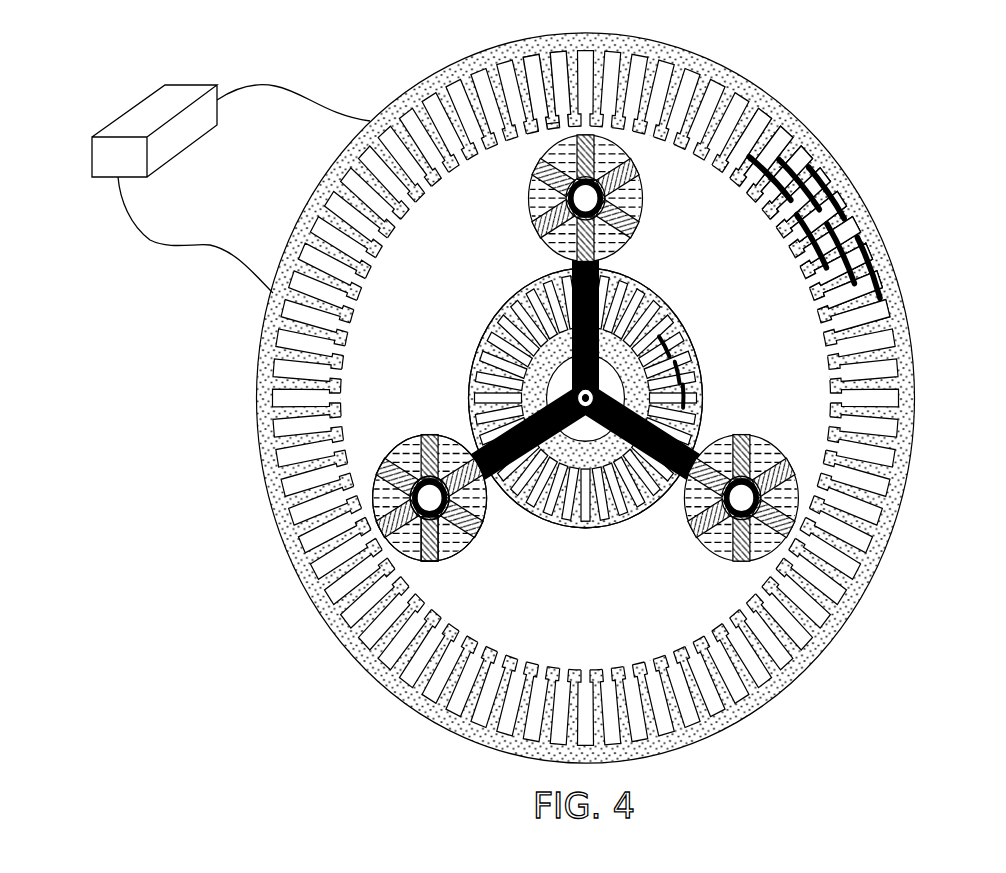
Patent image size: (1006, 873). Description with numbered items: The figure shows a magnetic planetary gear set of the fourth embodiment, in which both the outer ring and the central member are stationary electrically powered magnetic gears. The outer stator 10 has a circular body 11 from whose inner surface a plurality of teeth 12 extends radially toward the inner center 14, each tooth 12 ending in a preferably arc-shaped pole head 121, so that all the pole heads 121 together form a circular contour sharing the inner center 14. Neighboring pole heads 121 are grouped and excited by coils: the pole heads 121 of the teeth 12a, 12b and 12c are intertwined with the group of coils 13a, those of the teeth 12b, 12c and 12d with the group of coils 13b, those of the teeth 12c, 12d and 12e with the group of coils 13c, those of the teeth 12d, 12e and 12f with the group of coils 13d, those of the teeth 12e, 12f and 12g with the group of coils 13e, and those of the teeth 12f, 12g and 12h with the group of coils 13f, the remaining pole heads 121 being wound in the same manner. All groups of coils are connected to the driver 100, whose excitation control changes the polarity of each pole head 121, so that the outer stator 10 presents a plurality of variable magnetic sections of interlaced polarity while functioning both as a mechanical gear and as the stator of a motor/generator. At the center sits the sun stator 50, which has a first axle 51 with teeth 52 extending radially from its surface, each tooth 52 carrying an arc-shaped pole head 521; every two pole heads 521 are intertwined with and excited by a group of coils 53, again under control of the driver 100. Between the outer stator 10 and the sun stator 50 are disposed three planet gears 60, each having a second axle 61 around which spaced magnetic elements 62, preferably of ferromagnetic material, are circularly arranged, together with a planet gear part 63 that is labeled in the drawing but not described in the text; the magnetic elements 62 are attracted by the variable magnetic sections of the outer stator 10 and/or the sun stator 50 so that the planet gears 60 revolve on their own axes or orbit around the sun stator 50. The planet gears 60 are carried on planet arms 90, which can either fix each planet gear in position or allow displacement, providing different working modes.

The outer stator 10 is at (610, 388).
The circular body 11 is at (746, 72).
The teeth 12 is at (543, 34).
The tooth 12a is at (788, 107).
The tooth 12b is at (810, 127).
The tooth 12c is at (830, 150).
The tooth 12d is at (849, 175).
The tooth 12e is at (866, 201).
The tooth 12f is at (880, 228).
The tooth 12g is at (892, 258).
The tooth 12h is at (902, 288).
The pole head 121 is at (548, 123).
The group of coils 13a is at (752, 196).
The group of coils 13b is at (790, 208).
The group of coils 13c is at (852, 172).
The group of coils 13d is at (806, 245).
The group of coils 13e is at (812, 293).
The group of coils 13f is at (820, 312).
The inner center 14 is at (573, 388).
The sun stator 50 is at (593, 414).
The first axle 51 is at (563, 370).
The teeth 52 is at (469, 408).
The pole head 521 is at (597, 529).
The group of coils 53 is at (702, 357).
The planet gears 60 is at (447, 480).
The second axle 61 is at (448, 522).
The magnetic elements 62 is at (436, 556).
The planet gear body 63 is at (488, 505).
The planet arms 90 is at (697, 385).
The driver 100 is at (147, 117).